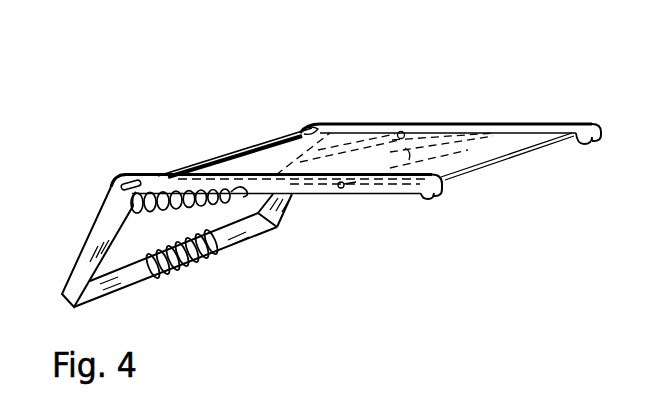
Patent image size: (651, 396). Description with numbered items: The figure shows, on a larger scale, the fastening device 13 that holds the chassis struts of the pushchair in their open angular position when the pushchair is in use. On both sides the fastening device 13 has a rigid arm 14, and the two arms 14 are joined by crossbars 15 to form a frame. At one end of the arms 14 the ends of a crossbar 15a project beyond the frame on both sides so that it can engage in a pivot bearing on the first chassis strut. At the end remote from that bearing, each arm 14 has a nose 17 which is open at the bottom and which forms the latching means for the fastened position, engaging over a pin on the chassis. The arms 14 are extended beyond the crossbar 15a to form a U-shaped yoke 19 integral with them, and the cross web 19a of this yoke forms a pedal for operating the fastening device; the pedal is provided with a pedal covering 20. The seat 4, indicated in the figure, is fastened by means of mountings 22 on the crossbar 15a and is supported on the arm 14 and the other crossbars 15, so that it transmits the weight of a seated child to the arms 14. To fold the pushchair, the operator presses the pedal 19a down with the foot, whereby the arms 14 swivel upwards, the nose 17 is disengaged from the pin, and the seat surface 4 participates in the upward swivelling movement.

The seat 4 is at (432, 143).
The fastening device 13 is at (362, 208).
The rigid arm 14 is at (530, 128).
The crossbar 15 is at (399, 128).
The crossbar 15a is at (237, 148).
The nose 17 is at (587, 145).
The U-shaped yoke 19 is at (85, 263).
The cross web 19a is at (130, 278).
The pedal covering 20 is at (190, 258).
The mounting 22 is at (253, 148).